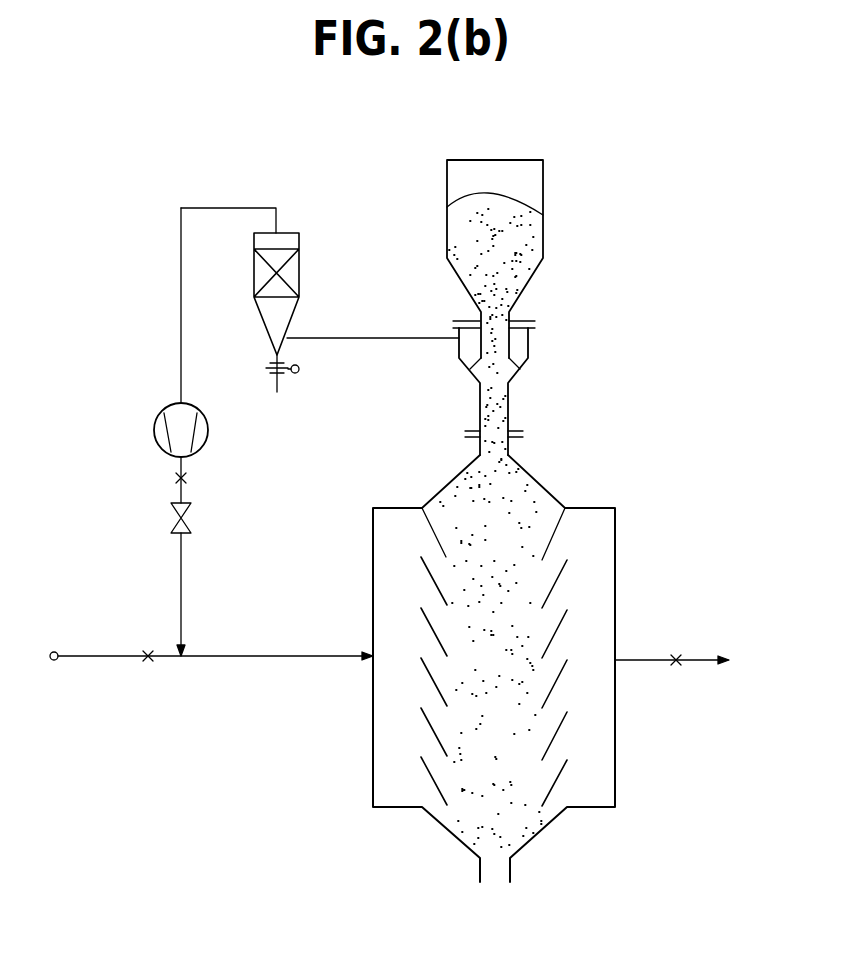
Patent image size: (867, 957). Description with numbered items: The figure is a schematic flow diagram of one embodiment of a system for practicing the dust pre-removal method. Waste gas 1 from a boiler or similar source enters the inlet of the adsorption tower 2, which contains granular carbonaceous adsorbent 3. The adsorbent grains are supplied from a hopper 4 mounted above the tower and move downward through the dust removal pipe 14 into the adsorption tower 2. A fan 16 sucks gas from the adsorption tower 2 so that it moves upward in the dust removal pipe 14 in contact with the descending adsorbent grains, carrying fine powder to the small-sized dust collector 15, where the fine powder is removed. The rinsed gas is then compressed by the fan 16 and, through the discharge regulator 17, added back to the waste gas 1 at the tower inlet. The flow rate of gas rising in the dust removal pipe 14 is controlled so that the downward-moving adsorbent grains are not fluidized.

The waste gas 1 is at (104, 660).
The adsorption tower 2 is at (405, 807).
The granular carbonaceous adsorbent 3 is at (513, 503).
The hopper 4 is at (543, 197).
The dust removal pipe 14 is at (511, 410).
The small-sized dust collector 15 is at (299, 277).
The fan 16 is at (208, 430).
The discharge regulator 17 is at (191, 518).